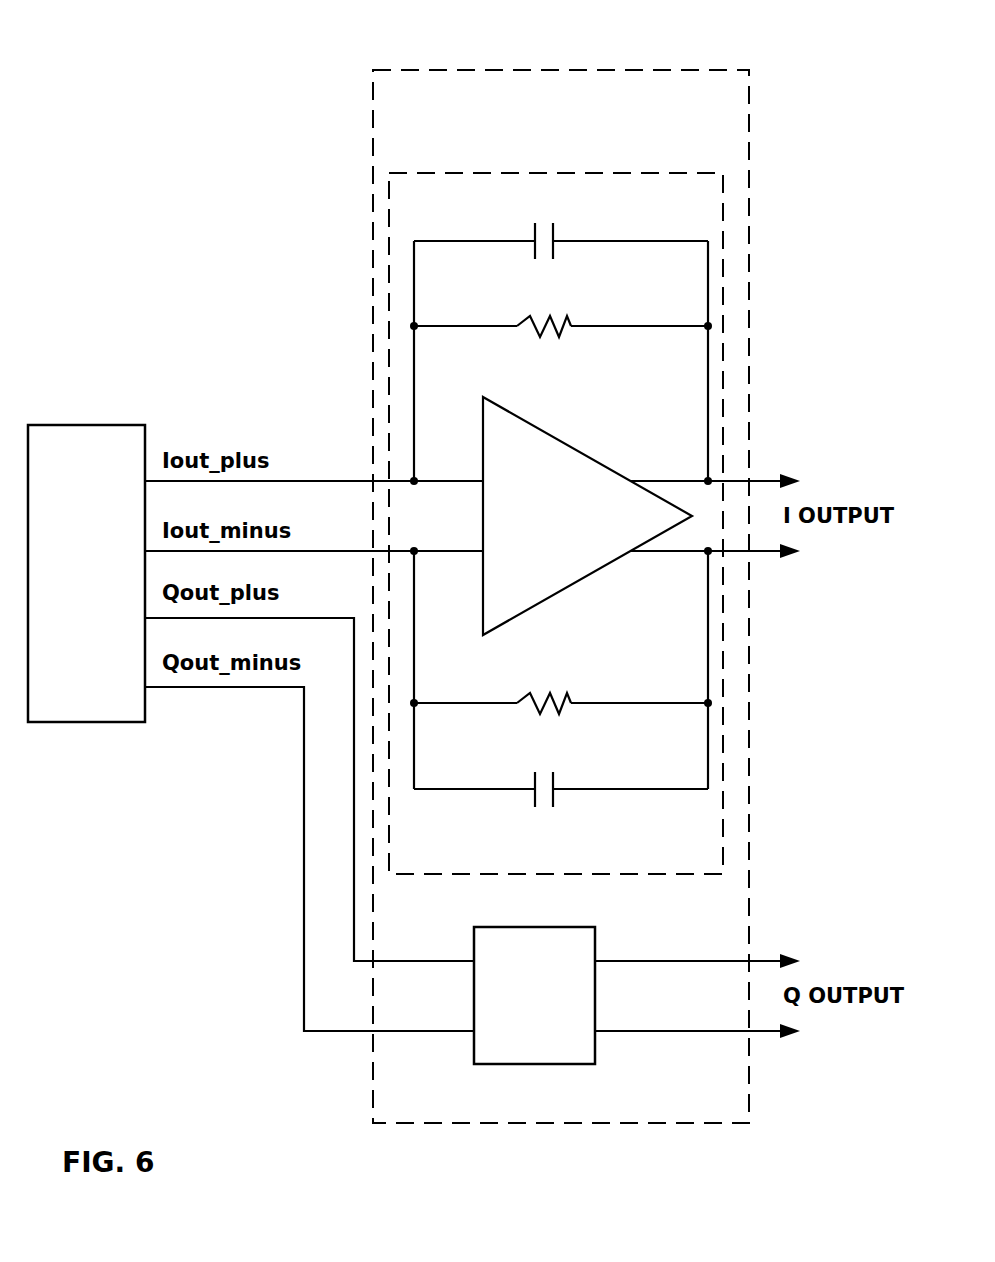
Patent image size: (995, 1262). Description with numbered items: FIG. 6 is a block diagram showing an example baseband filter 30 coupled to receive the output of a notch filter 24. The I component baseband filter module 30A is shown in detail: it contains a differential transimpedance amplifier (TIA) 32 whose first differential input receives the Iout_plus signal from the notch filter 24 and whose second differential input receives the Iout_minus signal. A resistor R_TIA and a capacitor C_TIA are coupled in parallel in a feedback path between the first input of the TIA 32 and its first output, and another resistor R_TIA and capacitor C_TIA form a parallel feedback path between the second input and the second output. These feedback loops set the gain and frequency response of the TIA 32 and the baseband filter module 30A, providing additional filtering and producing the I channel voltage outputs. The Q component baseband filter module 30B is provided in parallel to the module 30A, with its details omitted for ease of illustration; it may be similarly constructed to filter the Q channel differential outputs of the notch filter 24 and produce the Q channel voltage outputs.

The baseband filter 30 is at (563, 70).
The baseband filter module 30A is at (555, 173).
The transimpedance amplifier 32 is at (557, 437).
The notch filter 24 is at (62, 425).
The baseband filter module 30B is at (534, 995).